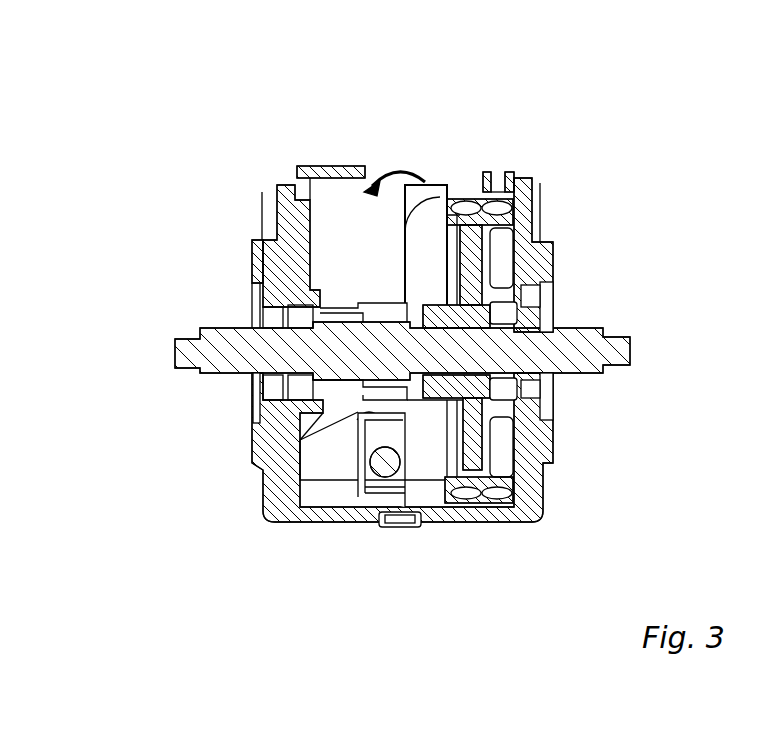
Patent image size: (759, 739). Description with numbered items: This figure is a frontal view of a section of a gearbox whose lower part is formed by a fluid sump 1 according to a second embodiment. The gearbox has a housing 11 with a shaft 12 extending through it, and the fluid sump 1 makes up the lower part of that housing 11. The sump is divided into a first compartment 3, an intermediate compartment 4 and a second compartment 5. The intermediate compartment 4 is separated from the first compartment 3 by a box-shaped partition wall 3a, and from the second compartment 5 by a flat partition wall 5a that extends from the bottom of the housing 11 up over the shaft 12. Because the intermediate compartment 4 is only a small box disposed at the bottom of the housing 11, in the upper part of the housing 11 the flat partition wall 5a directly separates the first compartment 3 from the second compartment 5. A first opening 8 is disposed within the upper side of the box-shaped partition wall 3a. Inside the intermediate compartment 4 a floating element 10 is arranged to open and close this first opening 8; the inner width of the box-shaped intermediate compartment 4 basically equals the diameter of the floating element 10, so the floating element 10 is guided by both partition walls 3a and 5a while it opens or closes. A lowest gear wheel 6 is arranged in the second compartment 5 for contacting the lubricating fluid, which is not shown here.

The fluid sump 1 is at (295, 522).
The first compartment 3 is at (320, 495).
The box-shaped partition wall 3a is at (352, 500).
The intermediate compartment 4 is at (400, 528).
The second compartment 5 is at (440, 500).
The flat partition wall 5a is at (440, 190).
The lowest gear wheel 6 is at (470, 205).
The first opening 8 is at (252, 443).
The floating element 10 is at (378, 472).
The housing 11 is at (262, 246).
The shaft 12 is at (233, 344).